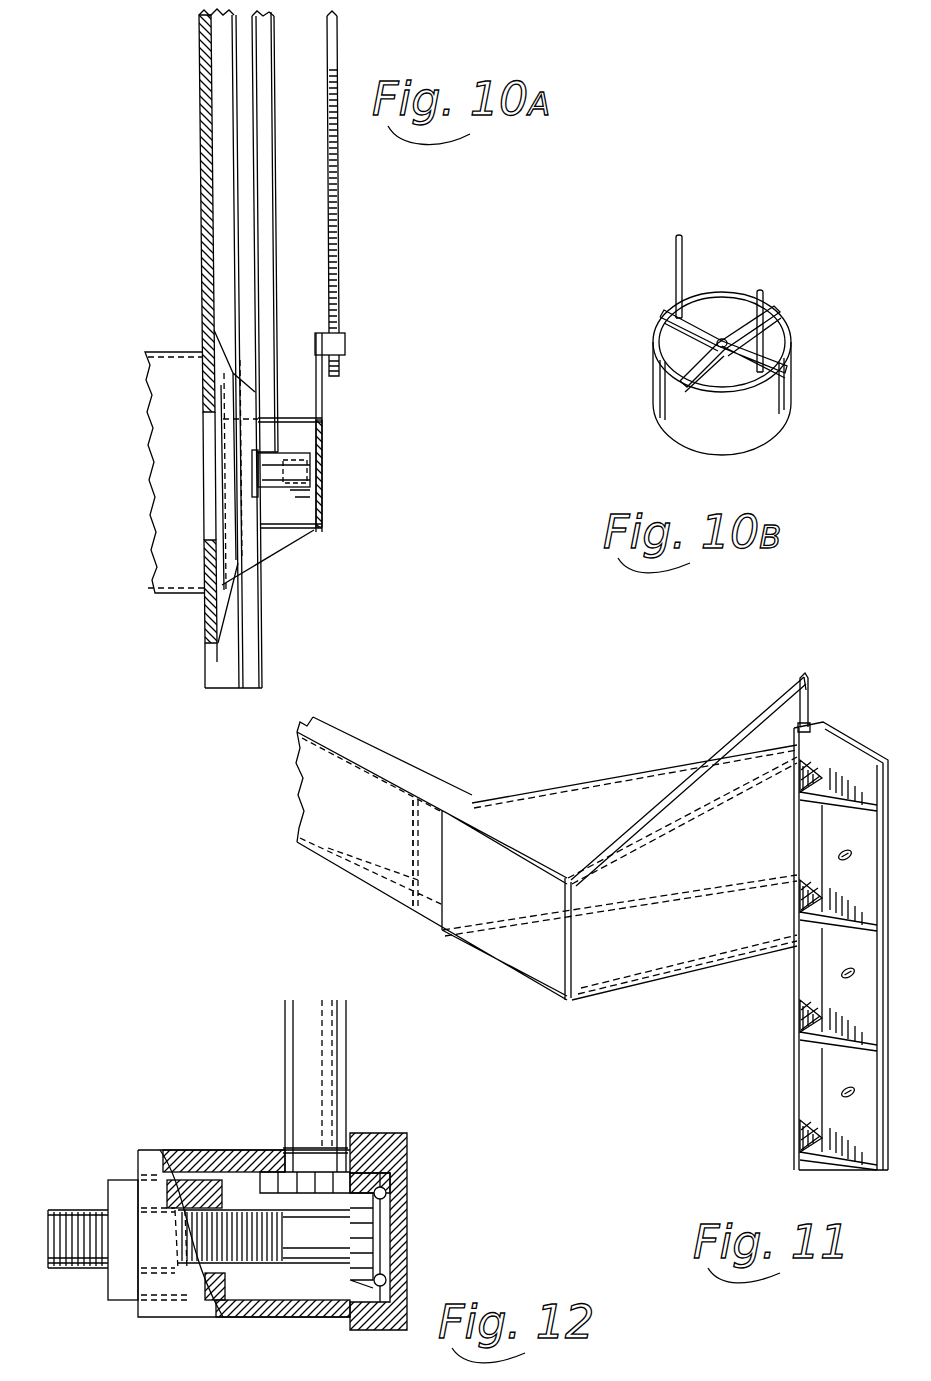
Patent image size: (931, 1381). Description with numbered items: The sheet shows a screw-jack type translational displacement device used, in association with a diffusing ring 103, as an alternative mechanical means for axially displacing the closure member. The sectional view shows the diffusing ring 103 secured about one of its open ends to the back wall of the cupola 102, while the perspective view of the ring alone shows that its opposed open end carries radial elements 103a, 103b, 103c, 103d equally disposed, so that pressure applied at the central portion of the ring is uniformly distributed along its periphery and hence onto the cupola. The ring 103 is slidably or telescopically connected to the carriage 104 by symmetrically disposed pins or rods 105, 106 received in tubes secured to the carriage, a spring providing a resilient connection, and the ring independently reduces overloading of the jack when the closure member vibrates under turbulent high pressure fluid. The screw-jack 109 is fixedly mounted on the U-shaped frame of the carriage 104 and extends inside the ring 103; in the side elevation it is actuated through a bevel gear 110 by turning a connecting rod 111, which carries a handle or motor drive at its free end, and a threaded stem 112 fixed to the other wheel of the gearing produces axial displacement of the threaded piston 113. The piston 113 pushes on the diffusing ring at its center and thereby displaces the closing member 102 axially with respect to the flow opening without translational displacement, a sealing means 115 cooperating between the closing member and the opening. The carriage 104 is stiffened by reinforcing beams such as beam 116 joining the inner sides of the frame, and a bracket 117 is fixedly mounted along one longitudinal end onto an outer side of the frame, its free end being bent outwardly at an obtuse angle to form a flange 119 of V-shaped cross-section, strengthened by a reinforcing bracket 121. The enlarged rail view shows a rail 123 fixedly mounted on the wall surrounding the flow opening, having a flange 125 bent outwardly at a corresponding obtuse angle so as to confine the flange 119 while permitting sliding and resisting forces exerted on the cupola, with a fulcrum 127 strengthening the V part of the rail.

In FIG. 10A, the cupola 102 is at (237, 590).
In FIG. 10B, the diffusing ring 103 is at (742, 428).
In FIG. 10B, the radial element 103a is at (687, 367).
In FIG. 10B, the radial element 103b is at (695, 322).
In FIG. 10B, the radial element 103c is at (745, 318).
In FIG. 10B, the radial element 103d is at (670, 406).
In FIG. 10A, the carriage 104 is at (320, 437).
In FIG. 11, the carriage 104 is at (413, 773).
In FIG. 10A, the rod 105 is at (334, 352).
In FIG. 10B, the rod 105 is at (765, 338).
In FIG. 10A, the rod 106 is at (312, 537).
In FIG. 10B, the rod 106 is at (676, 256).
In FIG. 10A, the screw-jack 109 is at (324, 496).
In FIG. 12, the screw-jack 109 is at (463, 1010).
In FIG. 12, the bevel gear 110 is at (347, 1186).
In FIG. 10A, the connecting rod 111 is at (267, 265).
In FIG. 12, the connecting rod 111 is at (310, 1043).
In FIG. 12, the threaded stem 112 is at (240, 1220).
In FIG. 12, the threaded piston 113 is at (125, 1203).
In FIG. 10A, the sealing means 115 is at (215, 626).
In FIG. 11, the reinforcing beam 116 is at (410, 882).
In FIG. 10A, the bracket 117 is at (290, 543).
In FIG. 11, the bracket 117 is at (674, 967).
In FIG. 11, the flange 119 is at (806, 693).
In FIG. 11, the reinforcing bracket 121 is at (587, 803).
In FIG. 10A, the rail 123 is at (248, 669).
In FIG. 11, the rail 123 is at (845, 830).
In FIG. 11, the flange 125 is at (805, 732).
In FIG. 11, the fulcrum 127 is at (834, 914).